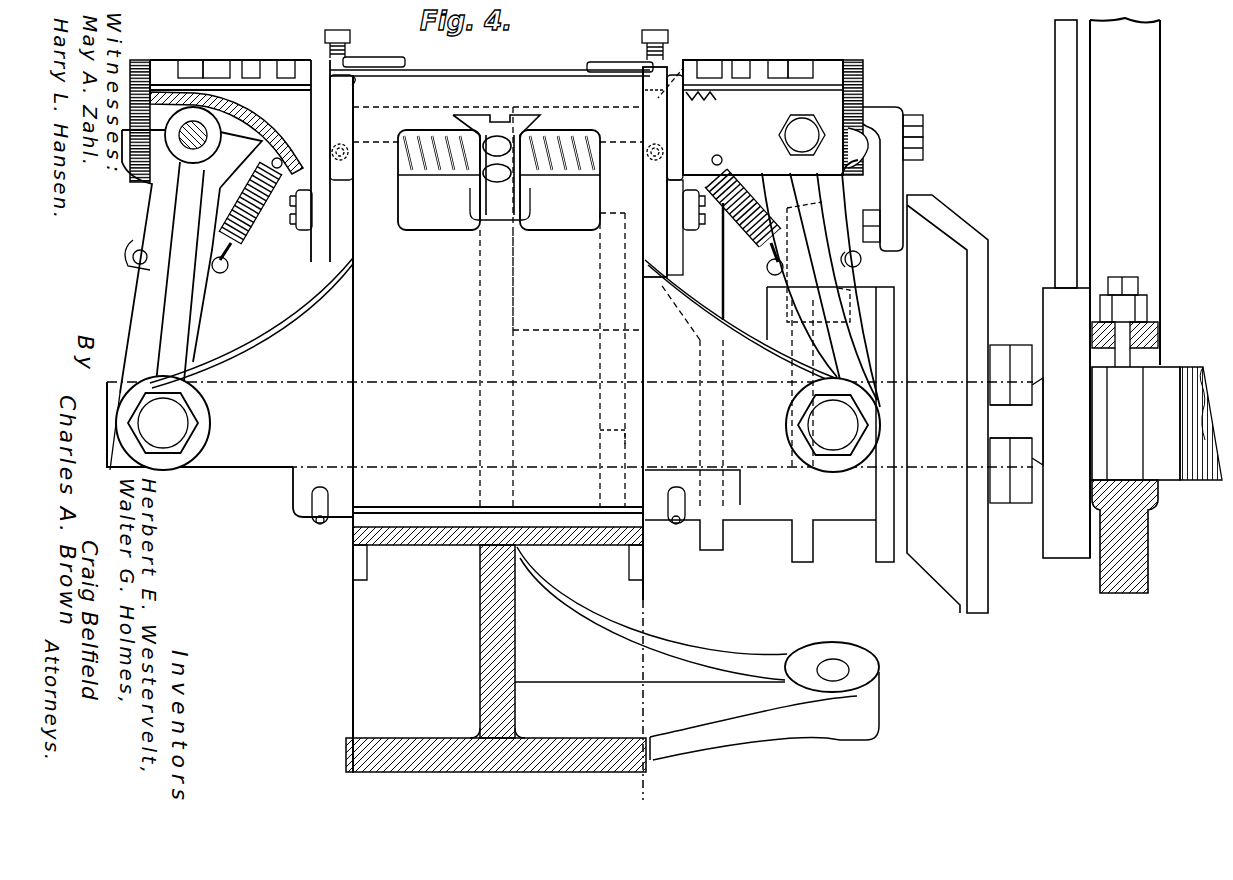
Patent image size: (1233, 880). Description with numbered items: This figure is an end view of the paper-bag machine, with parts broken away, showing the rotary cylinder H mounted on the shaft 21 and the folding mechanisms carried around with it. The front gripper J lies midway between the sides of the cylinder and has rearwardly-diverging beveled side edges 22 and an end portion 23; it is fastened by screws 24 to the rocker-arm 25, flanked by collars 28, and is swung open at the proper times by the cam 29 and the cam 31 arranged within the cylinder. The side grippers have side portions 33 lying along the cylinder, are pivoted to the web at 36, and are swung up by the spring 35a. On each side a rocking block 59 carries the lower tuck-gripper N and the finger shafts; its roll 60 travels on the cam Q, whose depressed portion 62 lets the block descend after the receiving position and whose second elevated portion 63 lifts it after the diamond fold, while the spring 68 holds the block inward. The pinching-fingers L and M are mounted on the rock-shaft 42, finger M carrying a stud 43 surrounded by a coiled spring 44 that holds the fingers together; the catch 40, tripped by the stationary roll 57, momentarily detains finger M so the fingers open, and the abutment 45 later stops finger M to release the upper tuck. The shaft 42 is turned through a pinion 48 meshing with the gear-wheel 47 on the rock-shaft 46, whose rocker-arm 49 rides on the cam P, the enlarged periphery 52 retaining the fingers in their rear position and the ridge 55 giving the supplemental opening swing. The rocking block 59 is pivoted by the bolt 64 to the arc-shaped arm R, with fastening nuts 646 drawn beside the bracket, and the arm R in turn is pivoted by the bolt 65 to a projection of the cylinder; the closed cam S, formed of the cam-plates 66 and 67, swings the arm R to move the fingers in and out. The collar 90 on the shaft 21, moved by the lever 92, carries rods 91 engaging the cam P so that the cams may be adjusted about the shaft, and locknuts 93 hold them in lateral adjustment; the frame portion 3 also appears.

The pinion 48 is at (140, 60).
The rock-shaft 42 is at (155, 75).
The rock-shaft 46 is at (226, 133).
The catch 40 is at (335, 137).
The roll 60 is at (348, 158).
The roll 57 is at (308, 232).
The arm R is at (180, 226).
The gear-wheel 47 is at (131, 178).
The rocker-arm 49 is at (118, 165).
The spring 68 is at (243, 232).
The bolt 65 is at (185, 404).
The abutment 45 is at (313, 503).
The cylinder H is at (353, 328).
The pinching-finger L is at (618, 60).
The pinching-finger M is at (584, 68).
The lower tuck-gripper N is at (596, 70).
The stud 43 is at (345, 42).
The coiled spring 44 is at (326, 38).
The side portions 33 is at (362, 86).
The pivotal connection 36 is at (418, 140).
The collars 28 is at (497, 204).
The spring 35a is at (427, 175).
The front gripper J is at (492, 125).
The inclined or beveled side edges 22 is at (475, 112).
The screws 24 is at (483, 150).
The rocker-arm 25 is at (512, 178).
The end portion 23 is at (514, 150).
The cam 29 is at (600, 298).
The cam 31 is at (598, 440).
The depressed portion 62 is at (630, 270).
The second elevated portion 63 is at (698, 402).
The cam Q is at (345, 240).
The arm h is at (288, 312).
The horizontal portion 3 is at (641, 809).
The rocking block 59 is at (557, 117).
The bolt 64 is at (800, 120).
The nuts 646 is at (912, 130).
The closed cam S is at (846, 522).
The cam-plate 66 is at (800, 562).
The cam-plate 67 is at (888, 562).
The cam P is at (960, 228).
The enlarged periphery 52 is at (990, 252).
The projection or ridge 55 is at (968, 424).
The lever 92 is at (1058, 180).
The collar 90 is at (1052, 296).
The locknuts 93 is at (1022, 348).
The rods or arms 91 is at (1032, 435).
The shaft 21 is at (1040, 470).